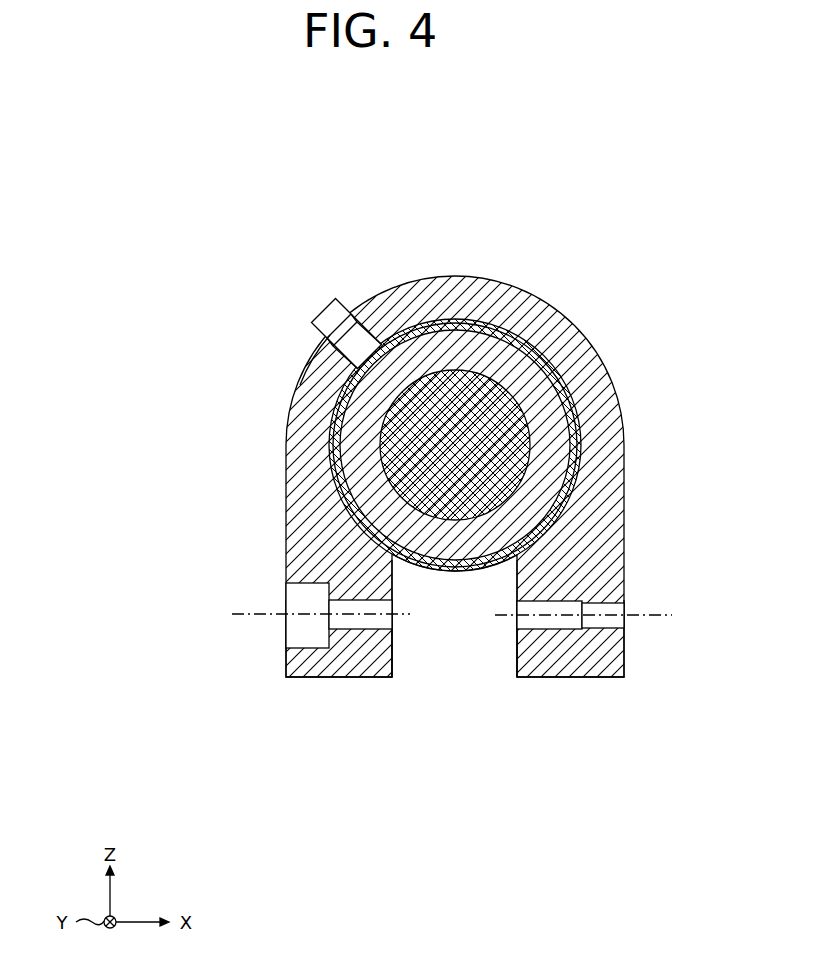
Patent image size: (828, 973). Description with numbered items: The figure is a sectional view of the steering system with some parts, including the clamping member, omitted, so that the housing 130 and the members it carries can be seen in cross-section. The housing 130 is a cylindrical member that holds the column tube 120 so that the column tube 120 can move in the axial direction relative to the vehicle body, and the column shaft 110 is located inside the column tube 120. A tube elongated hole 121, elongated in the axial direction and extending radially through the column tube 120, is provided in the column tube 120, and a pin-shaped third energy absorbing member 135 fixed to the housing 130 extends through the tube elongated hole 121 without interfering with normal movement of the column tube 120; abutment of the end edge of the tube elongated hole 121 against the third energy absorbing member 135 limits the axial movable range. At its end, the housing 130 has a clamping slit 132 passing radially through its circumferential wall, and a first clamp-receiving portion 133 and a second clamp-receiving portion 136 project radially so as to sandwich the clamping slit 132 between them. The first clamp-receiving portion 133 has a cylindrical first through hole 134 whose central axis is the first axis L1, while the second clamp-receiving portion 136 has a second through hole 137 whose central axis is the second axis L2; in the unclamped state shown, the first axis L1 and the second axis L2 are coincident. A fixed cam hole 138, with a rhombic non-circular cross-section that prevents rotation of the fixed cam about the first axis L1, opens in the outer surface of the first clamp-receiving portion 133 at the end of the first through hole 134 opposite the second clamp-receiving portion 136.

The column shaft 110 is at (385, 478).
The column tube 120 is at (408, 328).
The tube elongated hole 121 is at (340, 350).
The housing 130 is at (487, 276).
The clamping slit 132 is at (415, 576).
The first clamp-receiving portion 133 is at (318, 680).
The first through hole 134 is at (363, 622).
The third energy absorbing member 135 is at (321, 305).
The second clamp-receiving portion 136 is at (590, 680).
The second through hole 137 is at (545, 622).
The fixed cam hole 138 is at (310, 632).
The first axis L1 is at (241, 622).
The second axis L2 is at (657, 620).